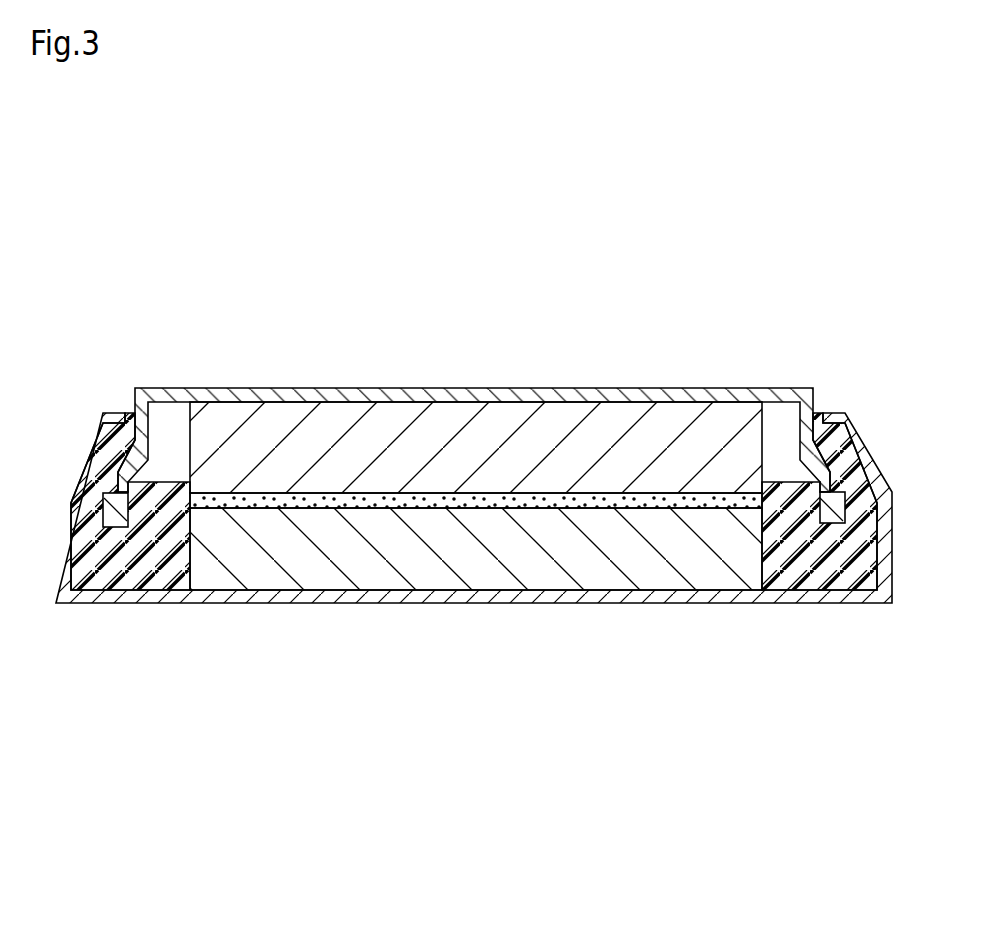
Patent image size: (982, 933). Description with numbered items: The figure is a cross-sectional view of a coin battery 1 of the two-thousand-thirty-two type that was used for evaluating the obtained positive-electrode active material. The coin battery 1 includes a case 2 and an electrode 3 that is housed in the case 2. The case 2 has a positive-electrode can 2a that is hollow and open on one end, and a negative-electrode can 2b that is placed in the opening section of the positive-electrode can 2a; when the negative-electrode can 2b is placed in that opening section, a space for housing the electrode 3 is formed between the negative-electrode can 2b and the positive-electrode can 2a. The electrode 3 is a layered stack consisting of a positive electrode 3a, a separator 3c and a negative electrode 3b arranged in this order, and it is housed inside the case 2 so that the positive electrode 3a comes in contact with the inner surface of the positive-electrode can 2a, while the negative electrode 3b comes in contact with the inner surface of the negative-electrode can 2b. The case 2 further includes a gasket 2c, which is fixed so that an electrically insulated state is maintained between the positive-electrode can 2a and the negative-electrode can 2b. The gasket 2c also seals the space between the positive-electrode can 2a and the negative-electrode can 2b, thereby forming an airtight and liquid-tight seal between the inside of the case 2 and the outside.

The coin battery 1 is at (463, 501).
The case 2 is at (463, 449).
The positive-electrode can 2a is at (82, 467).
The negative-electrode can 2b is at (474, 377).
The gasket 2c is at (113, 442).
The electrode 3 is at (476, 601).
The positive electrode 3a is at (602, 723).
The negative electrode 3b is at (572, 455).
The separator 3c is at (460, 515).